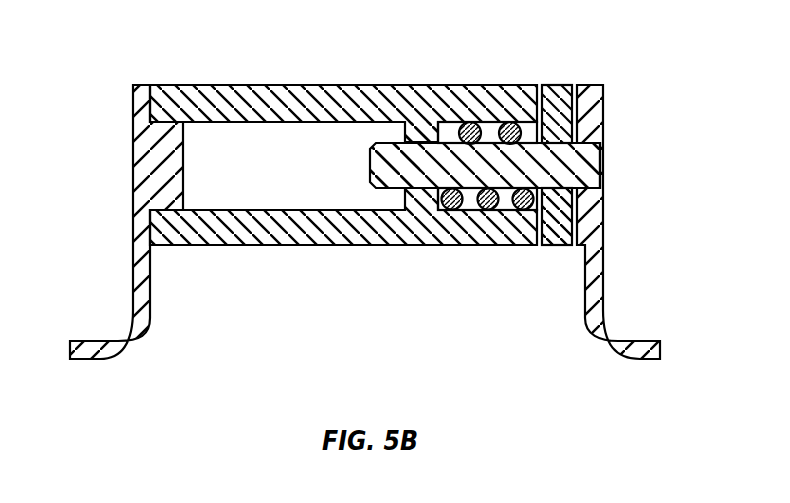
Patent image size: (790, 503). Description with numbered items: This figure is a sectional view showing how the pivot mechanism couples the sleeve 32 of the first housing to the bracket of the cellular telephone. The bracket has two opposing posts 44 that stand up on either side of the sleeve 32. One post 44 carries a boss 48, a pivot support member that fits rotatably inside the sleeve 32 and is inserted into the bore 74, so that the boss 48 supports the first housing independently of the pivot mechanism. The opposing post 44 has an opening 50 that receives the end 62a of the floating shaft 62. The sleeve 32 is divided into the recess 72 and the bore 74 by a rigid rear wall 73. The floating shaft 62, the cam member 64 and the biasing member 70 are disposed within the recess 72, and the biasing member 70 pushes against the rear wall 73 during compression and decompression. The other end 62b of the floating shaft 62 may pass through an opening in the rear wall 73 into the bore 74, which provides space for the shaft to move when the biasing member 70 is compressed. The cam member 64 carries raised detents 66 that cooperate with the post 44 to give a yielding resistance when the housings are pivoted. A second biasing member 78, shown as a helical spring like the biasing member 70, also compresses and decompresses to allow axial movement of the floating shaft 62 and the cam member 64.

The sleeve 32 is at (232, 85).
The posts 44 is at (595, 112).
The boss 48 is at (175, 153).
The opening 50 is at (606, 182).
The floating shaft 62 is at (415, 172).
The end of floating shaft 62a is at (588, 160).
The end of floating shaft 62b is at (370, 158).
The cam member 64 is at (553, 103).
The detents 66 is at (572, 244).
The biasing member 70 is at (468, 123).
The recess 72 is at (453, 127).
The rear wall 73 is at (427, 128).
The bore 74 is at (317, 140).
The biasing member 78 is at (547, 246).